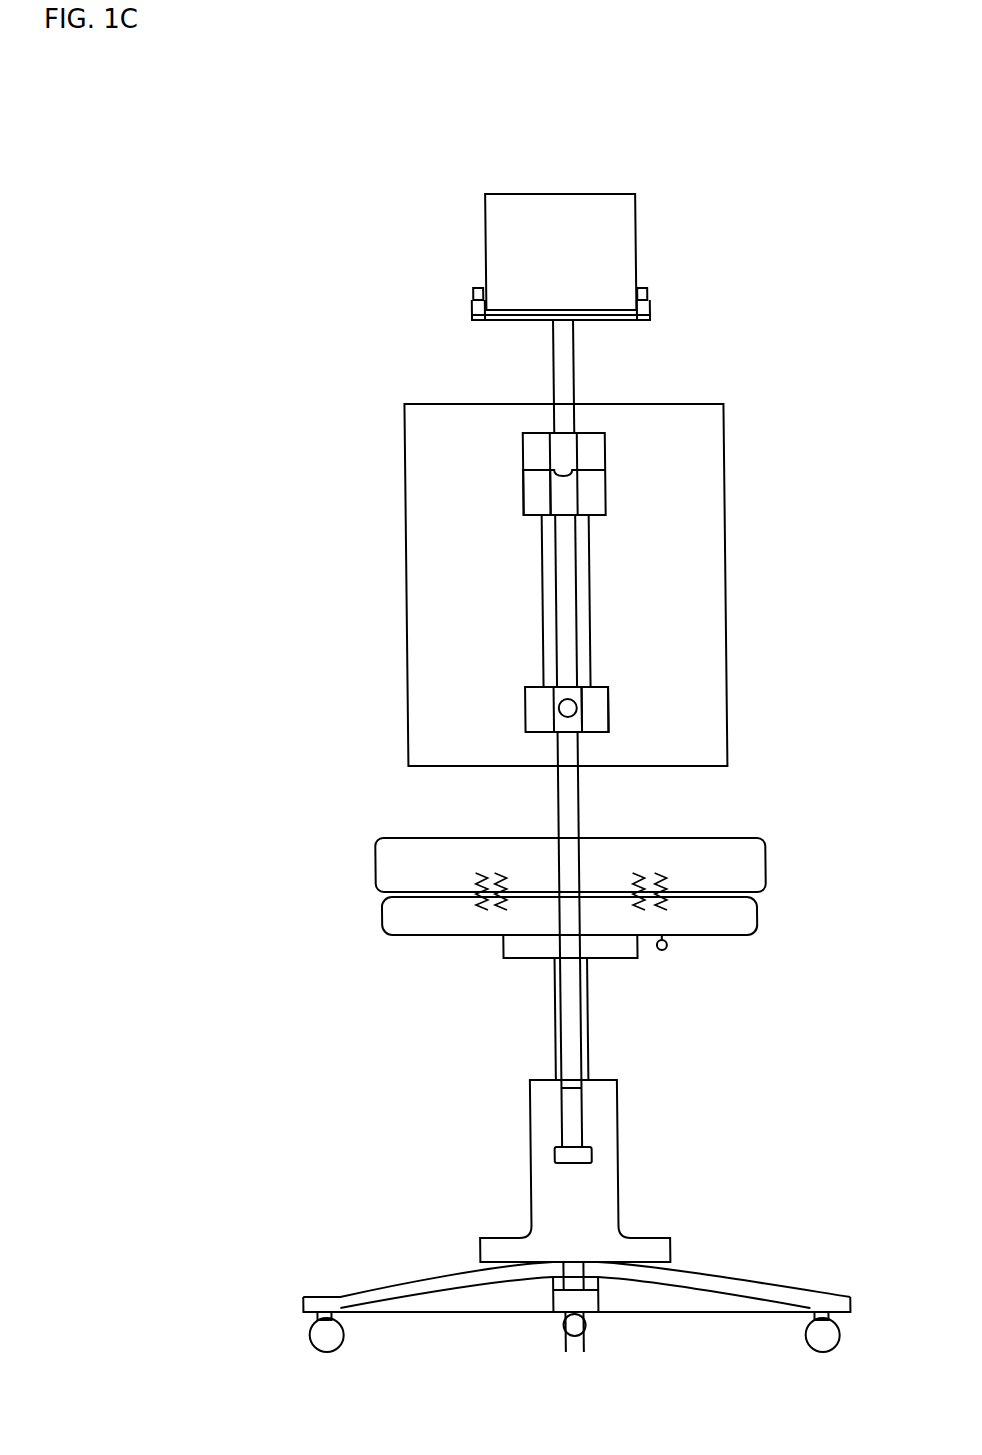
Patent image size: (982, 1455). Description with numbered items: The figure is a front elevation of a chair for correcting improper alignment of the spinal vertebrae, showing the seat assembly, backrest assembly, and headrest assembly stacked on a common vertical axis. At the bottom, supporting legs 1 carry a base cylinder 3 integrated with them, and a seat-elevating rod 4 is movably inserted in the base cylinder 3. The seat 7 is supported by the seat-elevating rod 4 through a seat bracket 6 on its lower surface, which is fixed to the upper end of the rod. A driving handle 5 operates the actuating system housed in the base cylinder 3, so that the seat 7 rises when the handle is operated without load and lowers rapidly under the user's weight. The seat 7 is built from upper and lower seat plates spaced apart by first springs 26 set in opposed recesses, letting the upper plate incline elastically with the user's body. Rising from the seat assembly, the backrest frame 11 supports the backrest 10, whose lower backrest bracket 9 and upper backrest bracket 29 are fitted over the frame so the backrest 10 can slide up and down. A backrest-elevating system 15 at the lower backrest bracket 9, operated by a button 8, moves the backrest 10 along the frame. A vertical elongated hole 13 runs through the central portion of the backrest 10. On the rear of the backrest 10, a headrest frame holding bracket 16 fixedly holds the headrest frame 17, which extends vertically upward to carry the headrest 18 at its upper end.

The supporting legs 1 is at (776, 1293).
The base cylinder 3 is at (525, 1149).
The seat-elevating rod 4 is at (542, 1003).
The driving handle 5 is at (653, 951).
The seat bracket 6 is at (590, 957).
The seat 7 is at (366, 881).
The button 8 is at (555, 708).
The lower backrest bracket 9 is at (595, 712).
The backrest 10 is at (722, 487).
The backrest frame 11 is at (564, 790).
The vertical elongated hole 13 is at (532, 563).
The backrest-elevating system 15 is at (579, 684).
The headrest frame holding bracket 16 is at (550, 448).
The headrest frame 17 is at (569, 352).
The headrest 18 is at (630, 248).
The first springs 26 is at (658, 903).
The upper backrest bracket 29 is at (527, 507).